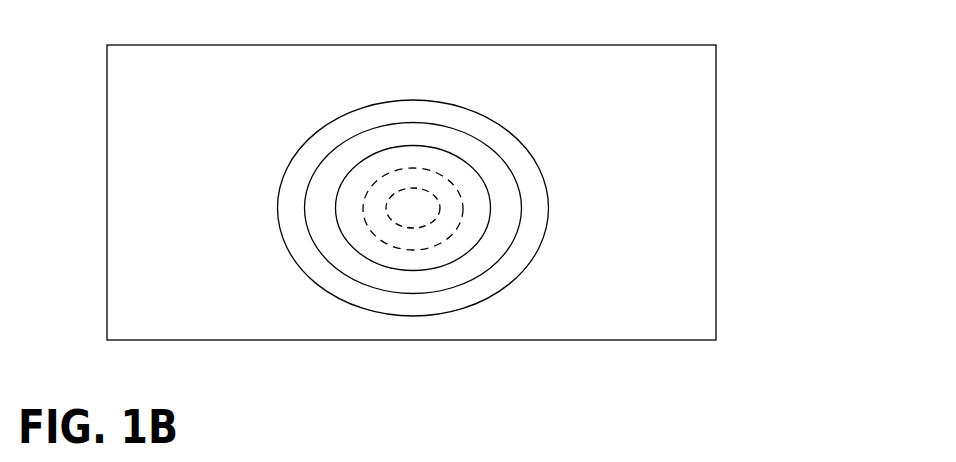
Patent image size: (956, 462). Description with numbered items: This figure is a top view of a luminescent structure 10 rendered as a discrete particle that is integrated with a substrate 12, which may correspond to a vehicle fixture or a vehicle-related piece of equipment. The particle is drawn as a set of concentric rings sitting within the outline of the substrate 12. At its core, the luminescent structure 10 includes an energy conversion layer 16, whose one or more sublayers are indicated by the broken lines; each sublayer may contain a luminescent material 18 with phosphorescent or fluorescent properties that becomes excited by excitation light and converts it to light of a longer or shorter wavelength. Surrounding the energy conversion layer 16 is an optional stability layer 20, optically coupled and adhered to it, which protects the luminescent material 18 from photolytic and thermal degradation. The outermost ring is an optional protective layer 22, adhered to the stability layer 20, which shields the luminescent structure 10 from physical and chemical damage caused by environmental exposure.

The luminescent structure 10 is at (322, 110).
The substrate 12 is at (720, 145).
The energy conversion layer 16 is at (467, 255).
The luminescent material 18 is at (400, 225).
The stability layer 20 is at (475, 138).
The protective layer 22 is at (450, 103).